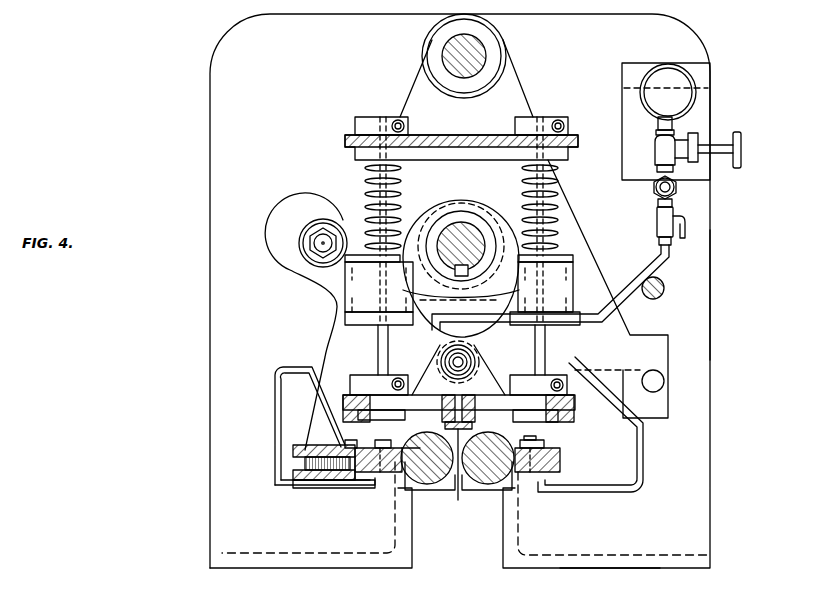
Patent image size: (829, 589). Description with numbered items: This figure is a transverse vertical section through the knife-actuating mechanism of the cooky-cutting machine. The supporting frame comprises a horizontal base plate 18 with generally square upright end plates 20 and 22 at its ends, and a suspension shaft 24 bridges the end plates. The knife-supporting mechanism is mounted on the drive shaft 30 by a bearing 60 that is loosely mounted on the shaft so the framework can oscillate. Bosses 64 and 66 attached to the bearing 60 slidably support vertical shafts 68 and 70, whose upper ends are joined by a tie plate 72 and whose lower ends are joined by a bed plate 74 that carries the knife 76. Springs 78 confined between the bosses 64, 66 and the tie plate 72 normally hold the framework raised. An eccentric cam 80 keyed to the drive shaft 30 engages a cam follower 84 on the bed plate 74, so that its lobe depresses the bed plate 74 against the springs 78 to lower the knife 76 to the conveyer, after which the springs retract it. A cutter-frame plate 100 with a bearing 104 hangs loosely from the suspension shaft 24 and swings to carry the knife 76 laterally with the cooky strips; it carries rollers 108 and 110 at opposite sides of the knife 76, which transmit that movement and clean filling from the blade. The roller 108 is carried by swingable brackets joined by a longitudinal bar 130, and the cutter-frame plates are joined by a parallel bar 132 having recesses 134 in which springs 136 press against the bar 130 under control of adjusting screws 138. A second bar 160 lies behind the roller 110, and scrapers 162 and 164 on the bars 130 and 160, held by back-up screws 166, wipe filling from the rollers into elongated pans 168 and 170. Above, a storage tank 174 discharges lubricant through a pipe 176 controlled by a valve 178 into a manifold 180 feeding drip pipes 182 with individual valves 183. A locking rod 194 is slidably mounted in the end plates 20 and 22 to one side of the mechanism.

The base plate 18 is at (604, 566).
The end plate 20 is at (216, 78).
The end plate 22 is at (695, 298).
The suspension shaft 24 is at (492, 60).
The drive shaft 30 is at (455, 236).
The bearing 60 is at (470, 210).
The boss 64 is at (350, 294).
The boss 66 is at (566, 285).
The vertical shaft 68 is at (375, 198).
The vertical shaft 70 is at (546, 352).
The tie plate 72 is at (432, 136).
The bed plate 74 is at (562, 410).
The knife 76 is at (462, 440).
The spring 78 is at (368, 185).
The eccentric cam 80 is at (492, 292).
The cam follower 84 is at (472, 355).
The cutter-frame plate 100 is at (407, 99).
The bearing 104 is at (473, 38).
The roller 108 is at (440, 490).
The roller 110 is at (485, 488).
The longitudinal bar 130 is at (376, 480).
The bar 132 is at (300, 446).
The recess 134 is at (328, 457).
The spring 136 is at (340, 478).
The adjusting screw 138 is at (300, 472).
The second bar 160 is at (548, 462).
The scraper 162 is at (396, 446).
The scraper 164 is at (548, 442).
The back-up screw 166 is at (548, 446).
The pan 168 is at (278, 447).
The pan 170 is at (630, 474).
The storage tank 174 is at (693, 104).
The pipe 176 is at (700, 126).
The valve 178 is at (662, 150).
The manifold 180 is at (676, 189).
The drip pipe 182 is at (660, 270).
The valve 183 is at (657, 218).
The rod 194 is at (664, 296).